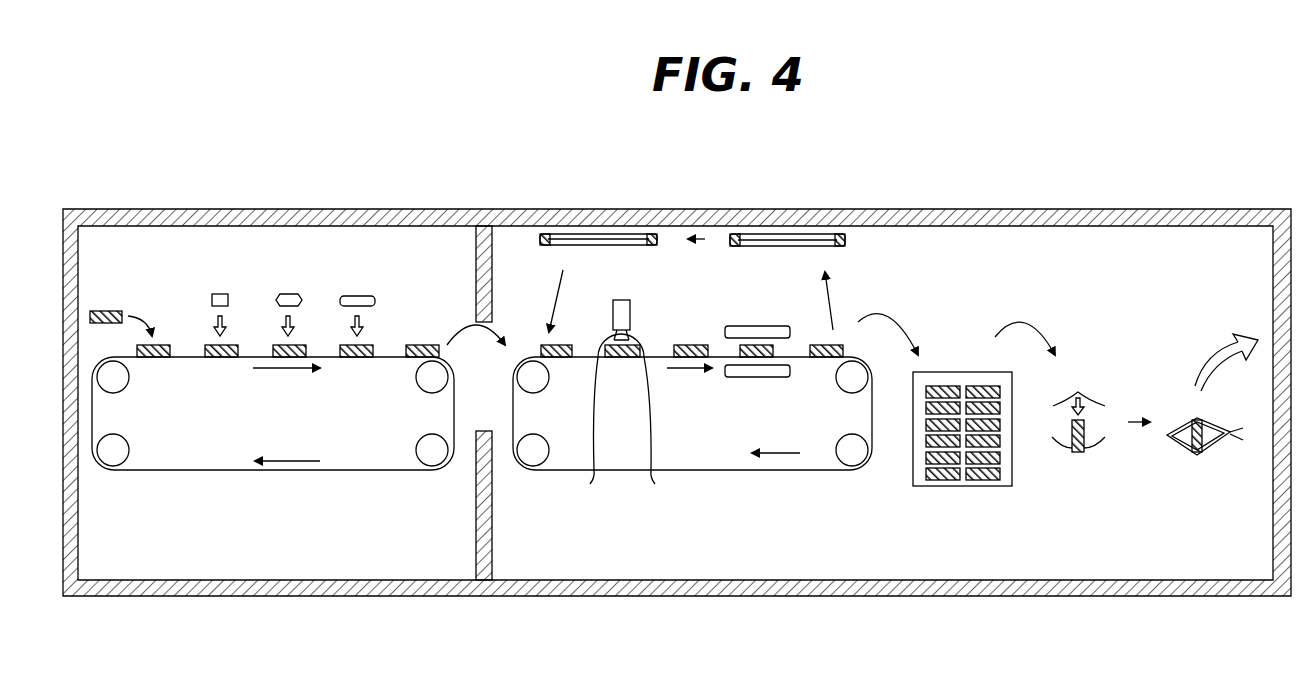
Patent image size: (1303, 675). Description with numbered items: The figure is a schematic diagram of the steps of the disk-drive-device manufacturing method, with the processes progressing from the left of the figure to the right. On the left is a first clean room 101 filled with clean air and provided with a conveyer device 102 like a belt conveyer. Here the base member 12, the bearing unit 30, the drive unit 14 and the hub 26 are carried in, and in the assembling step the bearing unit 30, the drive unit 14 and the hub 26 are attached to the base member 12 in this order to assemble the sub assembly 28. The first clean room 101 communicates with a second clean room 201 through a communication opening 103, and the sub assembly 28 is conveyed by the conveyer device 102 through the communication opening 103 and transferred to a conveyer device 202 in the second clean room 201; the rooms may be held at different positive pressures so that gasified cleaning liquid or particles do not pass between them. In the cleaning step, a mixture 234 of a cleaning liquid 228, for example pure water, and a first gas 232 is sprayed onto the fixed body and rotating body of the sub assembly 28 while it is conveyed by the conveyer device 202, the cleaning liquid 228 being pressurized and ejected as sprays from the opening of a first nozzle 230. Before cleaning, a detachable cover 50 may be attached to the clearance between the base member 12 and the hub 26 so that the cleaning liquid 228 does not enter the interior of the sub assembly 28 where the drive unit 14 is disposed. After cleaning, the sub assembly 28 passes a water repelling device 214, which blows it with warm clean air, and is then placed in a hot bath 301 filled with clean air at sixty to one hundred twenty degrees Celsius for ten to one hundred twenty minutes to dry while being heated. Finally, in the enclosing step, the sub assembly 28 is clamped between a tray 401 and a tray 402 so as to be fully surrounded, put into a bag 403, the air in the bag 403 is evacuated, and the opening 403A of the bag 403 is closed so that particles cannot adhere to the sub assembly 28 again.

The first clean room 101 is at (106, 242).
The conveyer device 102 is at (157, 470).
The communication opening 103 is at (478, 413).
The second clean room 201 is at (508, 243).
The conveyer device 202 is at (549, 470).
The base member 12 is at (106, 311).
The drive unit 14 is at (289, 294).
The hub 26 is at (358, 296).
The sub assembly 28 is at (428, 345).
The bearing unit 30 is at (222, 294).
The detachable cover 50 is at (645, 236).
The water repelling device 214 is at (750, 326).
The cleaning liquid 228 is at (610, 426).
The first nozzle 230 is at (638, 294).
The first gas 232 is at (662, 438).
The mixture 234 is at (629, 450).
The hot bath 301 is at (952, 487).
The tray 401 is at (1066, 443).
The tray 402 is at (1076, 395).
The bag 403 is at (1178, 448).
The opening 403A is at (1236, 440).